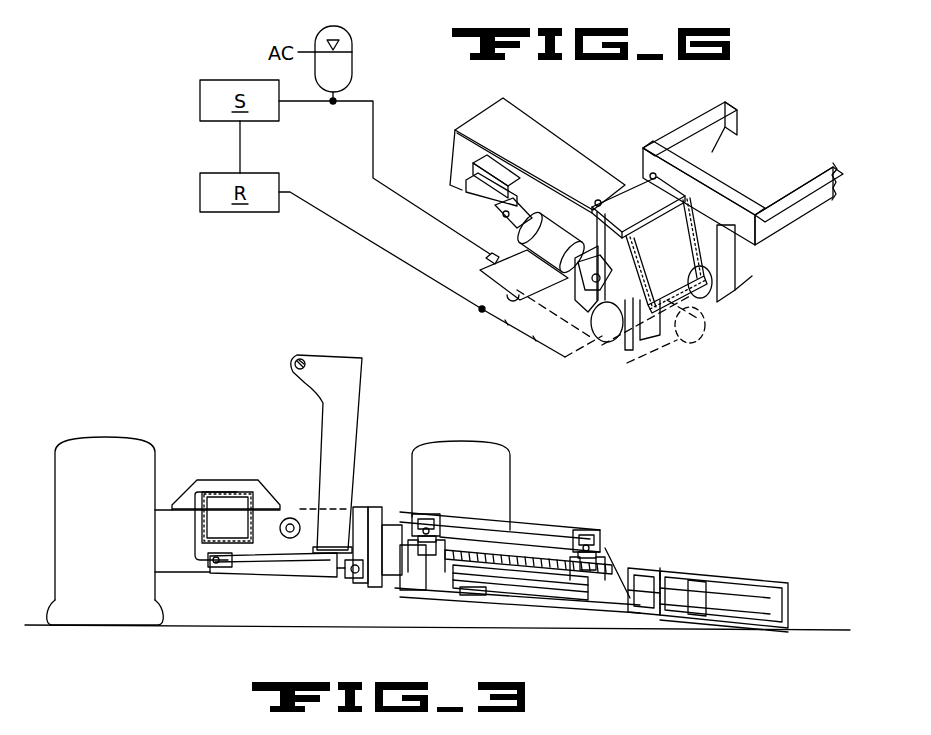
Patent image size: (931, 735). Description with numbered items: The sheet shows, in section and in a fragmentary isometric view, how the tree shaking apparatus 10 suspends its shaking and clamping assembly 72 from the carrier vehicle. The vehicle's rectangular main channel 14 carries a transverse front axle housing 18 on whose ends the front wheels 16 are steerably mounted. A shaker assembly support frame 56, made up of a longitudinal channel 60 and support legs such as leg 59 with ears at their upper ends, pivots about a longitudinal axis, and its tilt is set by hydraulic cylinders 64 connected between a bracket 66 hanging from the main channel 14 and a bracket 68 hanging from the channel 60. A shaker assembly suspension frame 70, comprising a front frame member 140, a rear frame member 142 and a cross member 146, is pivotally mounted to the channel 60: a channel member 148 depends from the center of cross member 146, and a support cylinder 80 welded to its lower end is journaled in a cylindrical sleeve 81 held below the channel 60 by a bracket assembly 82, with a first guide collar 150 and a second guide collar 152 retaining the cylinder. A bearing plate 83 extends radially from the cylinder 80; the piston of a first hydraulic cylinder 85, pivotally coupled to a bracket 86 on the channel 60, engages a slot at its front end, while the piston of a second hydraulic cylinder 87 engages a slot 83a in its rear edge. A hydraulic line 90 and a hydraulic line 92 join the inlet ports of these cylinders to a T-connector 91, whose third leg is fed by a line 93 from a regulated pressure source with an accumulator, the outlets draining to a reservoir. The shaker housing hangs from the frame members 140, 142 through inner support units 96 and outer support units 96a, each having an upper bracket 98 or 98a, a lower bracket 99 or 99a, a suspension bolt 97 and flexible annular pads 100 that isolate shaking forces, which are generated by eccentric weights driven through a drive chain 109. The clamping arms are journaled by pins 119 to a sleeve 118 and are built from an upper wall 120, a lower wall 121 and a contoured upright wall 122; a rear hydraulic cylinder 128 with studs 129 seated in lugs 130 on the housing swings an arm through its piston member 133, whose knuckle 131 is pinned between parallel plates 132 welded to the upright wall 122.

In FIG. 3, the tree shaking apparatus 10 is at (590, 460).
In FIG. 3, the main channel 14 is at (204, 492).
In FIG. 3, the front wheels 16 is at (116, 491).
In FIG. 3, the front axle housing 18 is at (160, 536).
In FIG. 3, the shaker assembly support frame 56 is at (318, 400).
In FIG. 3, the support leg 59 is at (362, 388).
In FIG. 6, the channel 60 is at (455, 136).
In FIG. 3, the hydraulic cylinders 64 is at (250, 580).
In FIG. 3, the bracket 66 is at (206, 566).
In FIG. 3, the bracket 68 is at (360, 512).
In FIG. 6, the shaker assembly suspension frame 70 is at (742, 165).
In FIG. 3, the shaker assembly suspension frame 70 is at (402, 508).
In FIG. 3, the shaking and clamping assembly 72 is at (398, 606).
In FIG. 6, the support cylinder 80 is at (615, 345).
In FIG. 6, the cylindrical sleeve 81 is at (700, 320).
In FIG. 3, the cylindrical sleeve 81 is at (344, 576).
In FIG. 6, the bracket assembly 82 is at (638, 186).
In FIG. 6, the bearing plate 83 is at (585, 299).
In FIG. 6, the slot 83a is at (640, 352).
In FIG. 6, the first hydraulic cylinder 85 is at (556, 238).
In FIG. 6, the bracket 86 is at (466, 186).
In FIG. 6, the second hydraulic cylinder 87 is at (708, 318).
In FIG. 3, the second hydraulic cylinder 87 is at (293, 517).
In FIG. 6, the hydraulic line 90 is at (505, 245).
In FIG. 6, the T-connector 91 is at (486, 258).
In FIG. 6, the hydraulic line 92 is at (480, 272).
In FIG. 6, the line 93 is at (373, 148).
In FIG. 3, the inner support units 96 is at (426, 514).
In FIG. 3, the outer support units 96a is at (598, 533).
In FIG. 3, the suspension bolt 97 is at (430, 527).
In FIG. 3, the upper bracket 98 is at (440, 530).
In FIG. 3, the upper bracket 98a is at (600, 552).
In FIG. 3, the lower bracket 99 is at (400, 585).
In FIG. 3, the lower bracket 99a is at (571, 590).
In FIG. 3, the flexible annular pads 100 is at (442, 521).
In FIG. 3, the drive chain 109 is at (548, 545).
In FIG. 3, the sleeve 118 is at (661, 614).
In FIG. 3, the pins 119 is at (655, 569).
In FIG. 3, the upper wall 120 is at (752, 599).
In FIG. 3, the lower wall 121 is at (762, 629).
In FIG. 3, the upright wall 122 is at (790, 590).
In FIG. 3, the rear hydraulic cylinder 128 is at (545, 600).
In FIG. 3, the studs 129 is at (470, 595).
In FIG. 3, the lugs 130 is at (488, 543).
In FIG. 3, the knuckle 131 is at (728, 583).
In FIG. 3, the parallel plates 132 is at (758, 608).
In FIG. 3, the piston member 133 is at (627, 616).
In FIG. 6, the front frame member 140 is at (700, 118).
In FIG. 6, the rear frame member 142 is at (825, 170).
In FIG. 3, the rear frame member 142 is at (497, 530).
In FIG. 6, the cross member 146 is at (718, 175).
In FIG. 6, the channel member 148 is at (736, 252).
In FIG. 6, the first guide collar 150 is at (707, 299).
In FIG. 6, the second guide collar 152 is at (656, 333).